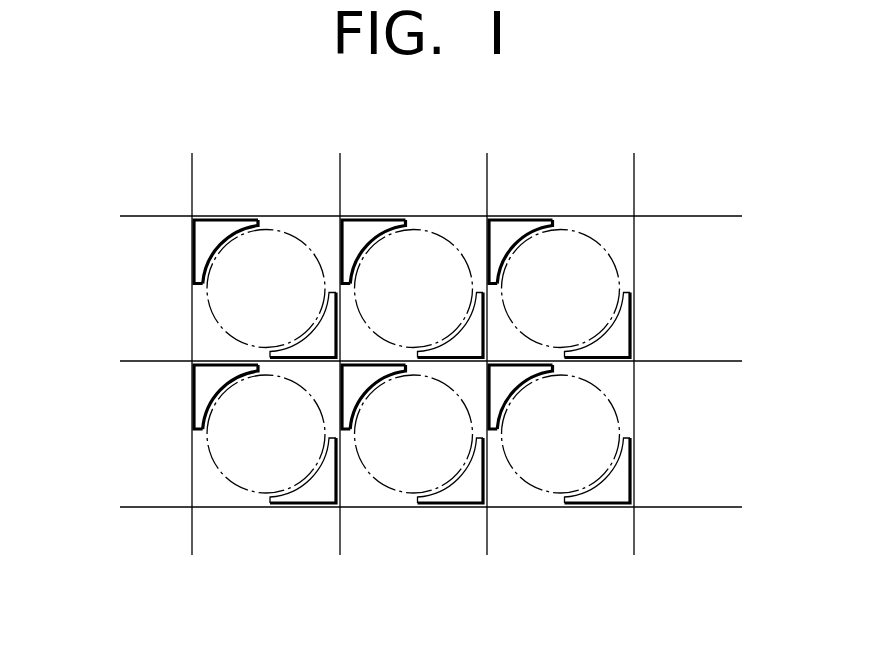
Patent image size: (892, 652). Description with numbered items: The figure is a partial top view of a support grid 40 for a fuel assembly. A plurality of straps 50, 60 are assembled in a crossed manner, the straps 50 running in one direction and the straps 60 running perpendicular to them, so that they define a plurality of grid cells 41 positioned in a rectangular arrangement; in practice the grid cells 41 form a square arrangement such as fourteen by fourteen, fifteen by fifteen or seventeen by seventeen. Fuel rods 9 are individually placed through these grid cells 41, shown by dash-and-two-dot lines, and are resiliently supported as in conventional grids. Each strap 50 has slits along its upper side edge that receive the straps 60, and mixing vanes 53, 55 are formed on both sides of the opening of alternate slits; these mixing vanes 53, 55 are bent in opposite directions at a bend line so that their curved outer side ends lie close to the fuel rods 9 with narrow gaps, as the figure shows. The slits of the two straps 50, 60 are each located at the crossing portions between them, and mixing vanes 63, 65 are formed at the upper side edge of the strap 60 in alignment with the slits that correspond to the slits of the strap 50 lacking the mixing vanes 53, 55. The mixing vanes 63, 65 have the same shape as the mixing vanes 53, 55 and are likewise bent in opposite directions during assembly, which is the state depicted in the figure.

The fuel rod 9 is at (302, 240).
The support grid 40 is at (90, 284).
The grid cell 41 is at (452, 230).
The strap 50 is at (689, 212).
The mixing vane 53 is at (363, 230).
The mixing vane 55 is at (465, 348).
The strap 60 is at (196, 194).
The mixing vane 63 is at (210, 237).
The mixing vane 65 is at (315, 350).